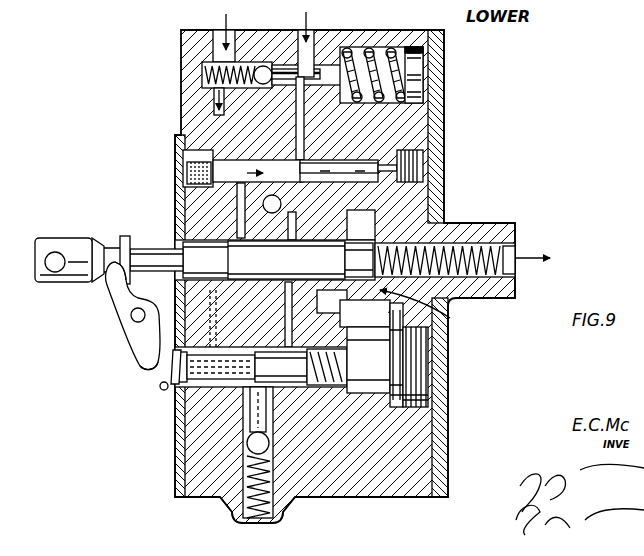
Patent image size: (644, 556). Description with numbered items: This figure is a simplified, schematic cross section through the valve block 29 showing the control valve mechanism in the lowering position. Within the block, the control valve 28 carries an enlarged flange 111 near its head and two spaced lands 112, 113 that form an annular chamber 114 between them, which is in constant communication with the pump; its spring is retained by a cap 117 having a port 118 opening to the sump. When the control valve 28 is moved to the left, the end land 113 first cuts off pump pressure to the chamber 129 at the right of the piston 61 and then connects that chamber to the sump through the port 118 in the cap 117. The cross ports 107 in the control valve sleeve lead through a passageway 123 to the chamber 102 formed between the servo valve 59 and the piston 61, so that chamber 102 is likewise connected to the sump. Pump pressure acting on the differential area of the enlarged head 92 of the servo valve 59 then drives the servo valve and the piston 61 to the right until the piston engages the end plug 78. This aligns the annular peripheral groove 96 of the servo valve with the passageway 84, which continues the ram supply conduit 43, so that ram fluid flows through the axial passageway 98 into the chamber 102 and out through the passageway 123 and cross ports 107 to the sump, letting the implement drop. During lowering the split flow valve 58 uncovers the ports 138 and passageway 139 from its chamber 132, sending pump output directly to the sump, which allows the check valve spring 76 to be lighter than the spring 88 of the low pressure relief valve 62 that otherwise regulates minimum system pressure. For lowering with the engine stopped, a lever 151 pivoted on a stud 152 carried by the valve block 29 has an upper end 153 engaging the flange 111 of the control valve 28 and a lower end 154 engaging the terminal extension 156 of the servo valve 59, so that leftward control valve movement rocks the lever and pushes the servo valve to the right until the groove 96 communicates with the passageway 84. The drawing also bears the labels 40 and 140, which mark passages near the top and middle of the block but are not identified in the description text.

The valve block 29 is at (198, 48).
The ram supply conduit 43 is at (219, 30).
The check valve spring 76 is at (202, 75).
The passageway 84 is at (213, 105).
The passage 40 is at (311, 30).
The split flow valve 58 is at (370, 150).
The chamber 132 is at (205, 168).
The ports 138 is at (283, 179).
The passageway 139 is at (259, 210).
The passage 140 is at (312, 224).
The control valve 28 is at (128, 238).
The enlarged flange 111 is at (136, 245).
The land 112 is at (275, 260).
The annular chamber 114 is at (286, 260).
The land 113 is at (359, 260).
The cap 117 is at (515, 232).
The port 118 is at (464, 259).
The passageway 123 is at (290, 326).
The cross ports 107 is at (409, 310).
The servo valve 59 is at (168, 378).
The axial passageway 98 is at (233, 386).
The enlarged head 92 is at (295, 362).
The chamber 102 is at (340, 400).
The piston 61 is at (350, 352).
The end plug 78 is at (420, 356).
The chamber 129 is at (428, 398).
The annular peripheral groove 96 is at (170, 368).
The terminal extension 156 is at (164, 391).
The spring 88 is at (230, 508).
The low pressure relief valve 62 is at (247, 446).
The lever 151 is at (118, 302).
The stud 152 is at (131, 318).
The upper end 153 is at (112, 277).
The lower end 154 is at (140, 364).